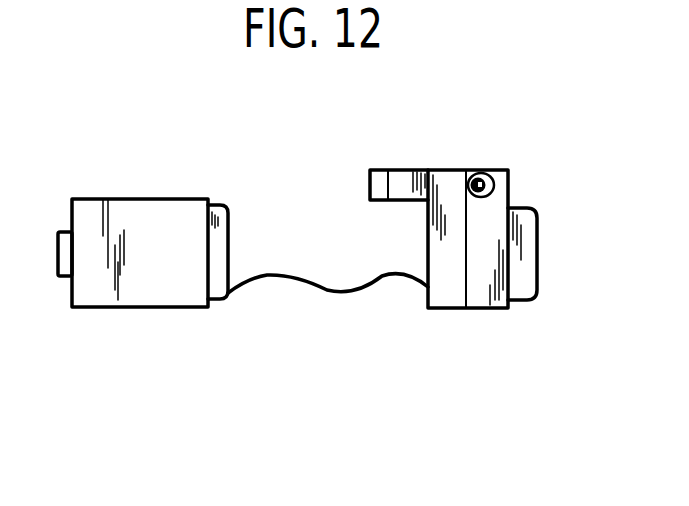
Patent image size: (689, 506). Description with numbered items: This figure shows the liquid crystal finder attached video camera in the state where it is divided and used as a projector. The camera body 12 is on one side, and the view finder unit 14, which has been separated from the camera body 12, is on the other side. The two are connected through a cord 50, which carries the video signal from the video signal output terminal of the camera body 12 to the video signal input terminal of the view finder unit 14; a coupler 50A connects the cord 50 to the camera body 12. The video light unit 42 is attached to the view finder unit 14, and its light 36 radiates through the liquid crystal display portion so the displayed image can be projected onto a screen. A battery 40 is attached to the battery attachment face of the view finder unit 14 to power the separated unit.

The camera body 12 is at (143, 190).
The view finder unit 14 is at (422, 168).
The light 36 is at (485, 173).
The battery 40 is at (537, 259).
The video light unit 42 is at (487, 304).
The cord 50 is at (285, 276).
The coupler 50A is at (214, 211).